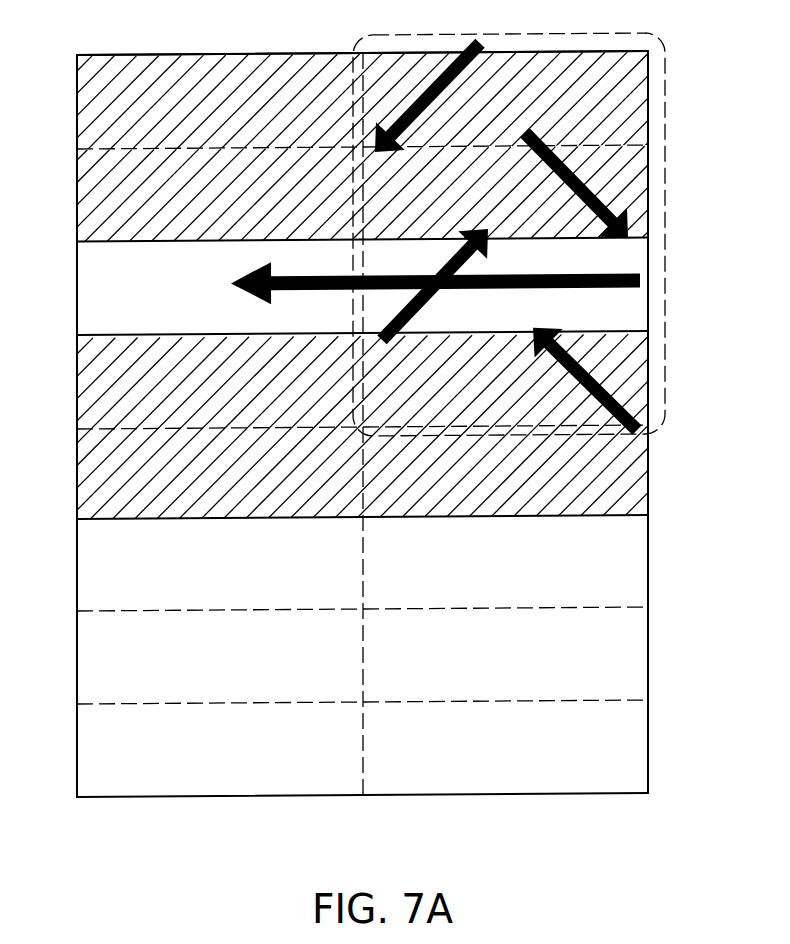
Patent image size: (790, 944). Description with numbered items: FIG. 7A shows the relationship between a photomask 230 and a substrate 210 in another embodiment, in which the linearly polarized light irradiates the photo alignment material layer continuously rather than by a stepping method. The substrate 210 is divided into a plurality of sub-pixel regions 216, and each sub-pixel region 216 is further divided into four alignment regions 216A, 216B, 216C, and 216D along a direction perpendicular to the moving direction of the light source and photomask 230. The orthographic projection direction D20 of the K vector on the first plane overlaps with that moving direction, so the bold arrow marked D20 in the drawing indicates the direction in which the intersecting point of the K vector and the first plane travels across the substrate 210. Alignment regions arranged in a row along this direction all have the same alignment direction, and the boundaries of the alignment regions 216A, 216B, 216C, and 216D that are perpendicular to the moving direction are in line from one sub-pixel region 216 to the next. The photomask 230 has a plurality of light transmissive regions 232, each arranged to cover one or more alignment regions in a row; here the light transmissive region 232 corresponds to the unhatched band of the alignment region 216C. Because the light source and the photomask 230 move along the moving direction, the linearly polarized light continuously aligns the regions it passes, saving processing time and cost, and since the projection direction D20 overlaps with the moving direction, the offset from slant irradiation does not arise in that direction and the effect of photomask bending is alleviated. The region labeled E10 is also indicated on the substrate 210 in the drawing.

The substrate 210 is at (630, 750).
The sub-pixel region 216 is at (665, 68).
The alignment region 216A is at (643, 101).
The alignment region 216B is at (643, 178).
The alignment region 216C is at (643, 257).
The alignment region 216D is at (643, 360).
The orthographic projection direction D20 is at (612, 288).
The photomask 230 is at (174, 51).
The light transmissive region 232 is at (105, 269).
The pixel electrode region E10 is at (658, 565).